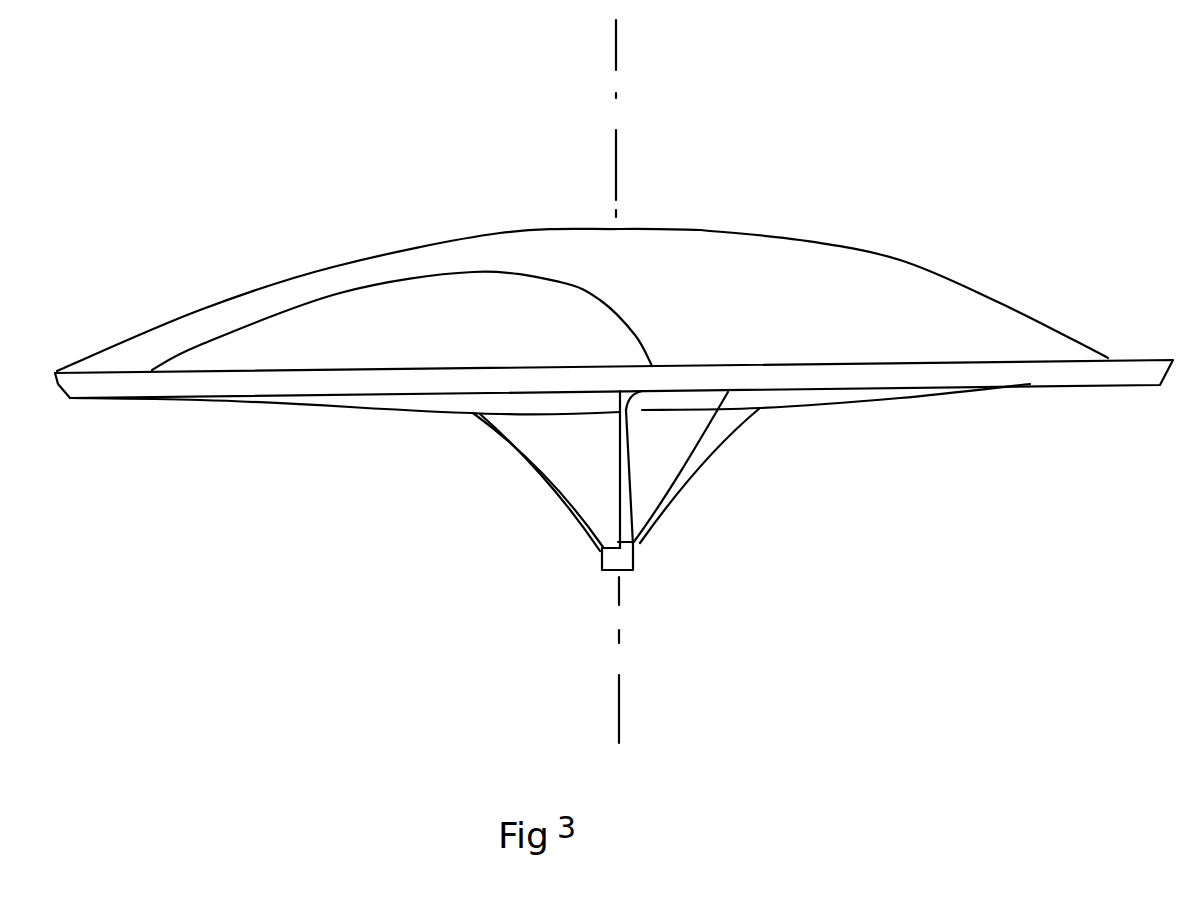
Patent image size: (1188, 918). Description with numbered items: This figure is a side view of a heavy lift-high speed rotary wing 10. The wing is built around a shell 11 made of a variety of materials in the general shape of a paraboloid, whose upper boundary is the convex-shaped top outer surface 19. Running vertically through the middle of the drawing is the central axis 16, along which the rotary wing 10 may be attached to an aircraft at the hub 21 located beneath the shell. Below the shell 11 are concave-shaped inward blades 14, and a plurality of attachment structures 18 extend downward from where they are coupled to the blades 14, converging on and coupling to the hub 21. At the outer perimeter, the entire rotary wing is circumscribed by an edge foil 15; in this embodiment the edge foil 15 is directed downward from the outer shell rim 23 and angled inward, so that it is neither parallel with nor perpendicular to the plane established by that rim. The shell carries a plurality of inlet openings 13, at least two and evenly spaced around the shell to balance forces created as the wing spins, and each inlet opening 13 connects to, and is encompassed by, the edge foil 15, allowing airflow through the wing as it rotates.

The heavy lift-high speed rotary wing 10 is at (972, 117).
The shell 11 is at (818, 313).
The inlet opening 13 is at (336, 281).
The concave-shaped inward blade 14 is at (458, 337).
The edge foil 15 is at (1052, 372).
The central axis 16 is at (629, 152).
The attachment structure 18 is at (597, 468).
The convex-shaped top outer surface 19 is at (951, 297).
The hub 21 is at (644, 571).
The outer shell rim 23 is at (66, 366).